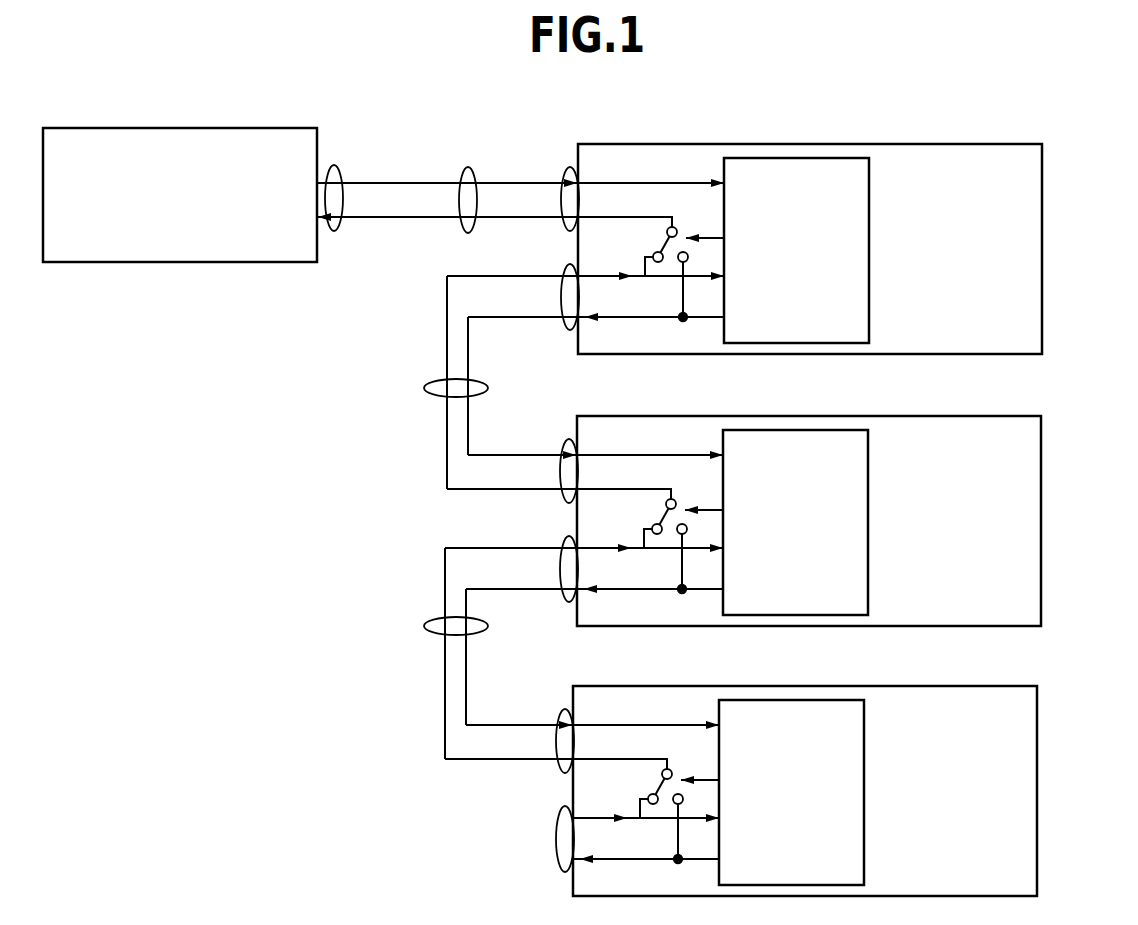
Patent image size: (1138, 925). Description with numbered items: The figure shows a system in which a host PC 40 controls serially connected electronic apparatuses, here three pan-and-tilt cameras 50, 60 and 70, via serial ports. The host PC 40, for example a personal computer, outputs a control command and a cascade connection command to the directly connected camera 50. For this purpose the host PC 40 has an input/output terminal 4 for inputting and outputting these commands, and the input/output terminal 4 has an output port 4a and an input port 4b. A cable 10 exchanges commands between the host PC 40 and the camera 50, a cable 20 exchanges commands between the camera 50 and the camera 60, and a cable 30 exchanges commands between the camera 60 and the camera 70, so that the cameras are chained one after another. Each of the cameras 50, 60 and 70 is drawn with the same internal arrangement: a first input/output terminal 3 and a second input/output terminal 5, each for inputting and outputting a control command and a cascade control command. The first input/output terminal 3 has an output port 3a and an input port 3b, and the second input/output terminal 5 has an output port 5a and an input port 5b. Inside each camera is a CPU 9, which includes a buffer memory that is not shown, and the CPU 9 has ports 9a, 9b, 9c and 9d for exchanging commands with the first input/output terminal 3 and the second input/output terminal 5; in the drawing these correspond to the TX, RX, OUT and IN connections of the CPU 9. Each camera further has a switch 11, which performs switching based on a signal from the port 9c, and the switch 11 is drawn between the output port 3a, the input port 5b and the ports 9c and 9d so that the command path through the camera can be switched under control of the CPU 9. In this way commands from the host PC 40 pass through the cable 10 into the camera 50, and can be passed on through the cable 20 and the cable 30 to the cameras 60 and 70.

The host PC 40 is at (190, 128).
The input/output terminal 4 is at (340, 228).
The output port 4a is at (417, 182).
The input port 4b is at (415, 216).
The cable 10 is at (462, 171).
The cable 20 is at (426, 382).
The cable 30 is at (426, 622).
The camera 50 is at (1043, 253).
The camera 60 is at (1042, 525).
The camera 70 is at (1038, 795).
The CPU 9 is at (870, 253).
The first input/output terminal 3 is at (566, 169).
The second input/output terminal 5 is at (563, 268).
The output port 3a is at (622, 482).
The input port 3b is at (582, 445).
The output port 5a is at (591, 575).
The input port 5b is at (648, 537).
The port 9a is at (648, 577).
The port 9b is at (648, 445).
The port 9c is at (693, 499).
The port 9d is at (695, 557).
The switch 11 is at (657, 242).